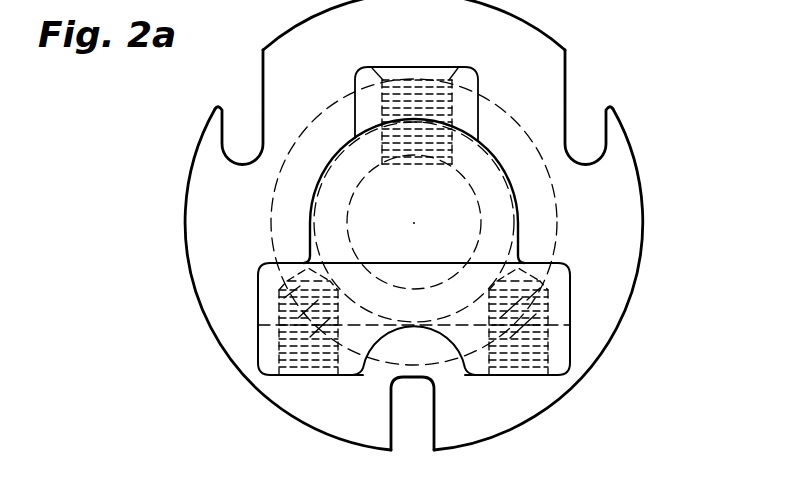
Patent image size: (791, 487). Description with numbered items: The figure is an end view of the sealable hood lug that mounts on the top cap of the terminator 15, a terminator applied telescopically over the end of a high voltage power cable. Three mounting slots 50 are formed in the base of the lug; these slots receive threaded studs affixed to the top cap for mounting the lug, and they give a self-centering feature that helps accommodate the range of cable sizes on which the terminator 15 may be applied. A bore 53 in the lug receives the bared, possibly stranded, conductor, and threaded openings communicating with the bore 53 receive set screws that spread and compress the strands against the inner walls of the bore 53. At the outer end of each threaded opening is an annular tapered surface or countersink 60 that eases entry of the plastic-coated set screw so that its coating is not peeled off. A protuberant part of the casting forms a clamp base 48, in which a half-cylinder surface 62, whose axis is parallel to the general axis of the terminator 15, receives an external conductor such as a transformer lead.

The terminator 15 is at (292, 194).
The clamp base 48 is at (258, 357).
The mounting slots 50 is at (240, 126).
The bore 53 is at (442, 188).
The countersink 60 is at (380, 78).
The surface 62 is at (360, 369).